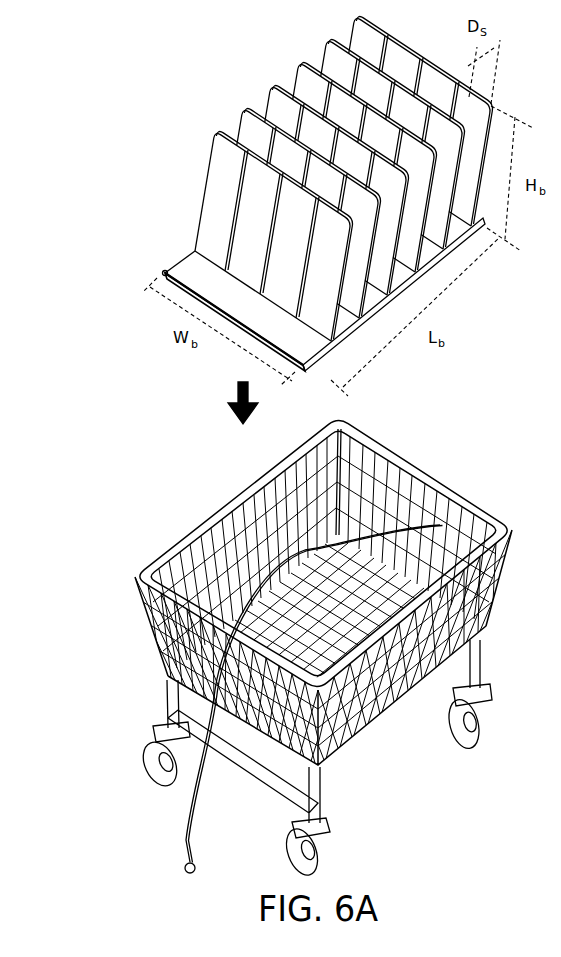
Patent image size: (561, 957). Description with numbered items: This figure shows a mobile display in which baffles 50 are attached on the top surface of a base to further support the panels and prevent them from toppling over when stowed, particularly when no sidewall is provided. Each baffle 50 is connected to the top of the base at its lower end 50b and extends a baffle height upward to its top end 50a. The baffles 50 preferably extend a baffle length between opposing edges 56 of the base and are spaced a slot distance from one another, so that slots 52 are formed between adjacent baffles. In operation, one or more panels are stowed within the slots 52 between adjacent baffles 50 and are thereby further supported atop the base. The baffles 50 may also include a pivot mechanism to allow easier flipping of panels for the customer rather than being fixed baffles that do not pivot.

The baffle 50 is at (221, 213).
The top end 50a is at (210, 132).
The lower end 50b is at (192, 249).
The slot 52 is at (278, 72).
The opposing edge 56 is at (462, 680).